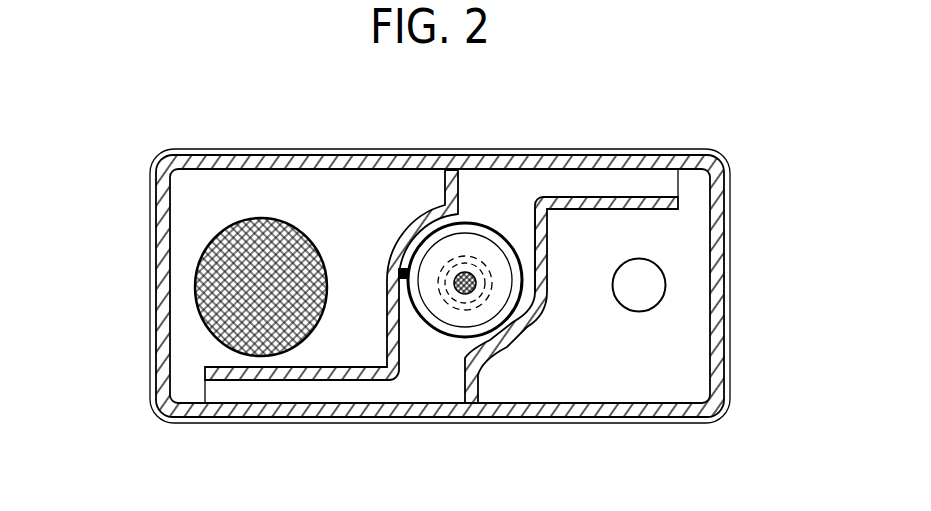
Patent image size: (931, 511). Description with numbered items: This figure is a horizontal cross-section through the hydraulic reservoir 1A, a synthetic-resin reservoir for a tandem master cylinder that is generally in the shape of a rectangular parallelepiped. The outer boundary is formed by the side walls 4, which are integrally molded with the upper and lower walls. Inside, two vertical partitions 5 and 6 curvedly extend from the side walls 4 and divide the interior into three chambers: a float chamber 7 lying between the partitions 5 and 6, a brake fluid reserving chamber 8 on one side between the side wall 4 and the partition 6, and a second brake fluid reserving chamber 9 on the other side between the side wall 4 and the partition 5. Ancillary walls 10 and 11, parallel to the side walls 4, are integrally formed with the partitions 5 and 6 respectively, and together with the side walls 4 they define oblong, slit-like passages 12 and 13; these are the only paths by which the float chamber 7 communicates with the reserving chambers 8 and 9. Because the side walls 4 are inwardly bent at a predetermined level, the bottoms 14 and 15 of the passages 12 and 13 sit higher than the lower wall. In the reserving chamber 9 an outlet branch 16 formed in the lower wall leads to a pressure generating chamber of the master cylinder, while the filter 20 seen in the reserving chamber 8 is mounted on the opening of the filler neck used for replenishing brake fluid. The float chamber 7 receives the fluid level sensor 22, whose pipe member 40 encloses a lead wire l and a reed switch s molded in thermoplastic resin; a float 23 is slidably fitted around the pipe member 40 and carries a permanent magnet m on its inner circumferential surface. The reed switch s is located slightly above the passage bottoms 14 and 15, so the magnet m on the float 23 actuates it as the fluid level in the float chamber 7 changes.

The hydraulic reservoir 1A is at (706, 113).
The side walls 4 is at (352, 163).
The partition 5 is at (535, 327).
The partition 6 is at (395, 235).
The float chamber 7 is at (443, 338).
The brake fluid reserving chamber 8 is at (335, 330).
The brake fluid reserving chamber 9 is at (650, 362).
The ancillary wall 10 is at (573, 205).
The ancillary wall 11 is at (278, 373).
The oblong passage 12 is at (637, 182).
The oblong passage 13 is at (227, 390).
The bottom of oblong passage 14 is at (518, 190).
The bottom of oblong passage 15 is at (367, 390).
The outlet branch 16 is at (664, 291).
The filter 20 is at (218, 275).
The fluid level sensor 22 is at (397, 273).
The float 23 is at (467, 247).
The pipe member 40 is at (471, 274).
The lead wire l is at (461, 279).
The reed switch s is at (455, 291).
The permanent magnet m is at (488, 293).